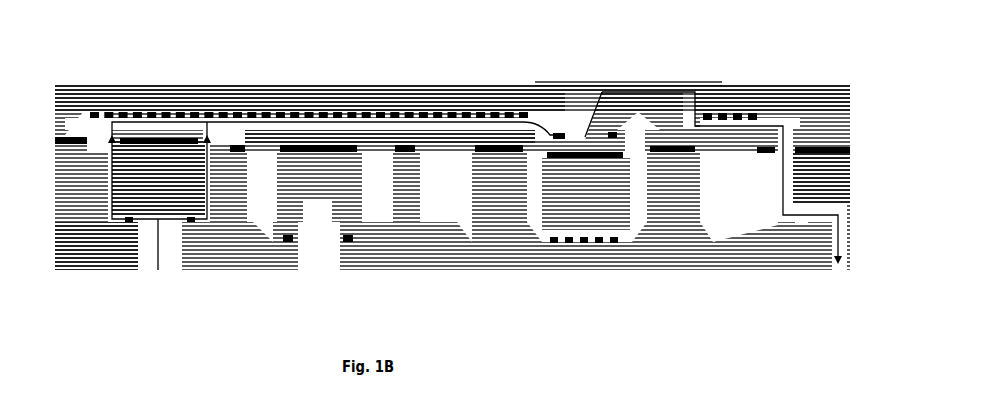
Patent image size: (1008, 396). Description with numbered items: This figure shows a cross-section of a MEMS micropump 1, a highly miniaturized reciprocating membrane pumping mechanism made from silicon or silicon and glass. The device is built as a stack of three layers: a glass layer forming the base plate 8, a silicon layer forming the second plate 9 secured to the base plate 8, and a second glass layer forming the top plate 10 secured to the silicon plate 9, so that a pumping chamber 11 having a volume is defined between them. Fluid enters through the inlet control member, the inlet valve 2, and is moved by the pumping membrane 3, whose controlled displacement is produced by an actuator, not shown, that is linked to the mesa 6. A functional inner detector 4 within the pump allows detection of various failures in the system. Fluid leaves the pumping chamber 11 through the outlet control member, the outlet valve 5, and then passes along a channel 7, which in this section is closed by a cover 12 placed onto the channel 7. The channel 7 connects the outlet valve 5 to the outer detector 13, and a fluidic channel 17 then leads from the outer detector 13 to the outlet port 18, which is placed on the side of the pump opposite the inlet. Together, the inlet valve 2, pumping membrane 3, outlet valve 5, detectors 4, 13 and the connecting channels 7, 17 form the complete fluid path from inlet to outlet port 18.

The MEMS micropump 1 is at (775, 63).
The inlet valve 2 is at (152, 163).
The pumping membrane 3 is at (268, 138).
The functional inner detector 4 is at (443, 137).
The outlet valve 5 is at (582, 143).
The mesa 6 is at (295, 162).
The channel 7 is at (630, 137).
The base plate 8 is at (93, 262).
The second plate 9 is at (815, 183).
The top plate 10 is at (818, 117).
The pumping chamber 11 is at (327, 125).
The cover 12 is at (678, 88).
The outer detector 13 is at (730, 135).
The fluidic channel 17 is at (802, 222).
The outlet port 18 is at (840, 242).